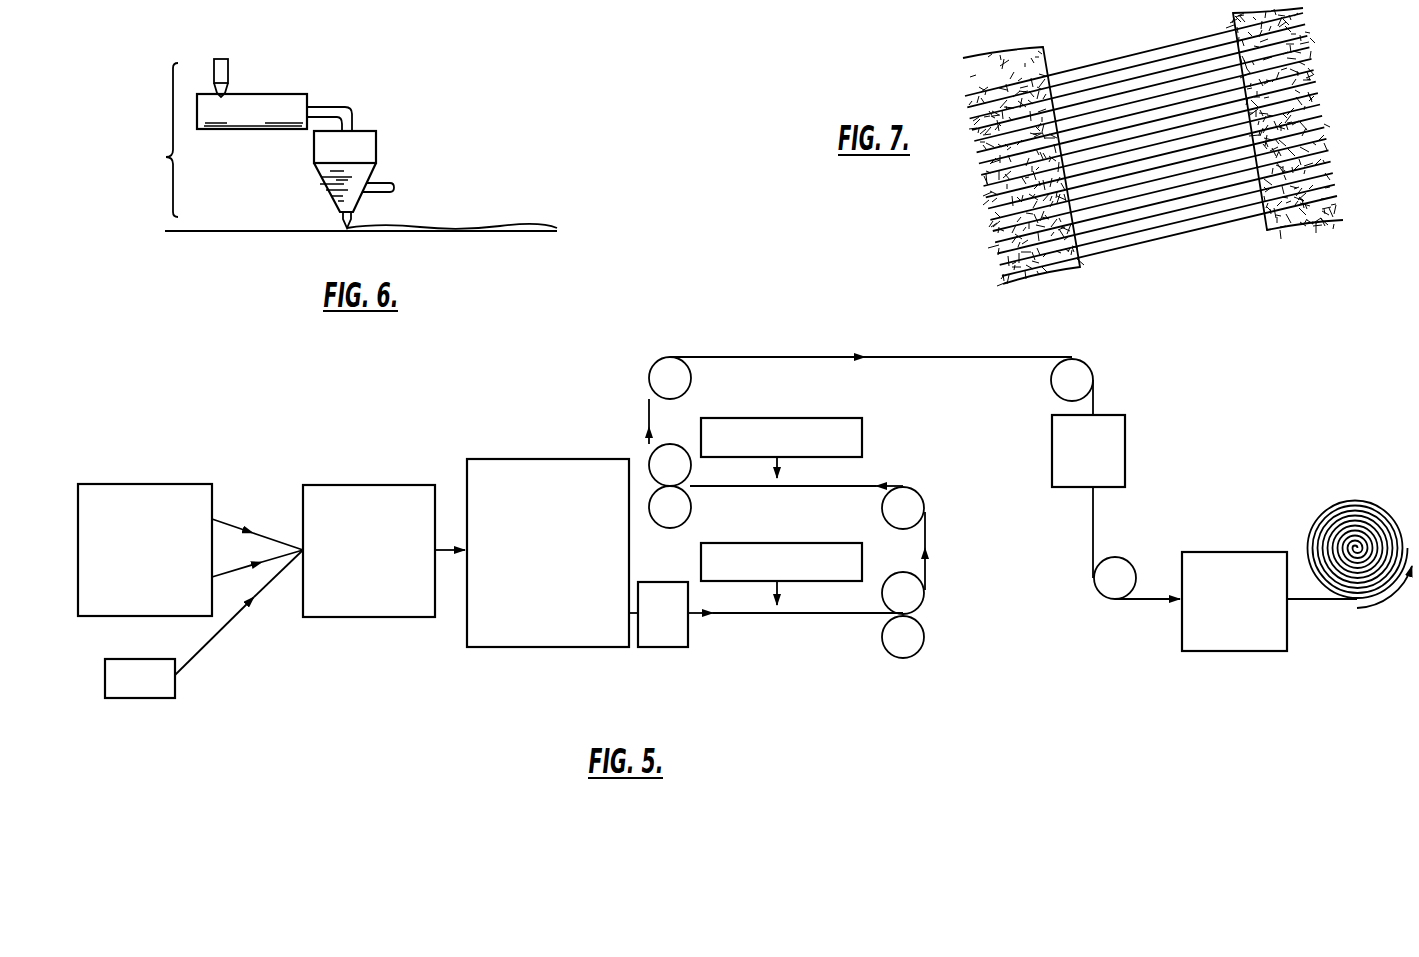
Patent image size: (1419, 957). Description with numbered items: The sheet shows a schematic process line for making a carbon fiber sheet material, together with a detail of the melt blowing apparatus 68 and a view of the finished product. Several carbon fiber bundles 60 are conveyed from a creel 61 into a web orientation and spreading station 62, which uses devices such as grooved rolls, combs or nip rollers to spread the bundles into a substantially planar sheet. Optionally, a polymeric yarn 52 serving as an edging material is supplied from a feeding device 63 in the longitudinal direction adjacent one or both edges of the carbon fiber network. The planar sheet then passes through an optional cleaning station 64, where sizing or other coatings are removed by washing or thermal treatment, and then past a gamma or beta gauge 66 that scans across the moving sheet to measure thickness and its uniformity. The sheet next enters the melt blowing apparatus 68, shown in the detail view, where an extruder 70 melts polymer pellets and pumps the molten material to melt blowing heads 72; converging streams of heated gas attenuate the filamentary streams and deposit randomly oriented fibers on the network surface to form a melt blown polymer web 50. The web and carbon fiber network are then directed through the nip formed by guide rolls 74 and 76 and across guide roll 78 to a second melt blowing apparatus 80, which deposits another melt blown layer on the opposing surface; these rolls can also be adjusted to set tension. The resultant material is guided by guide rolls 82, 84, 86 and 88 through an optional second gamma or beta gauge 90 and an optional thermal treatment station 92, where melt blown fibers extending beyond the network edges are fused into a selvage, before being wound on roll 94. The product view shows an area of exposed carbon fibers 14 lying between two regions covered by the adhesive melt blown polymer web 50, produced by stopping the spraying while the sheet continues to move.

In FIG. 7, the carbon fibers 14 is at (1088, 58).
In FIG. 7, the melt blown polymer web 50 is at (1020, 46).
In FIG. 5, the polymeric yarn 52 is at (208, 648).
In FIG. 5, the carbon fiber bundles 60 is at (237, 568).
In FIG. 5, the creel 61 is at (121, 485).
In FIG. 5, the web orientation and spreading station 62 is at (366, 485).
In FIG. 5, the feeding device 63 is at (130, 699).
In FIG. 5, the cleaning station 64 is at (519, 458).
In FIG. 5, the gamma or beta gauge 66 is at (677, 648).
In FIG. 5, the melt blowing apparatus 68 is at (766, 542).
In FIG. 6, the melt blowing apparatus 68 is at (284, 139).
In FIG. 6, the extruder 70 is at (268, 106).
In FIG. 6, the melt blowing heads 72 is at (370, 175).
In FIG. 5, the guide roll 74 is at (909, 640).
In FIG. 5, the guide roll 76 is at (912, 594).
In FIG. 5, the guide roll 78 is at (909, 497).
In FIG. 5, the second melt blowing apparatus 80 is at (751, 417).
In FIG. 5, the guide roll 82 is at (676, 512).
In FIG. 5, the guide roll 84 is at (663, 463).
In FIG. 5, the guide roll 86 is at (673, 372).
In FIG. 5, the guide roll 88 is at (1081, 383).
In FIG. 5, the gamma or beta gauge 90 is at (1125, 448).
In FIG. 5, the thermal treatment station 92 is at (1182, 637).
In FIG. 5, the roll 94 is at (1378, 506).